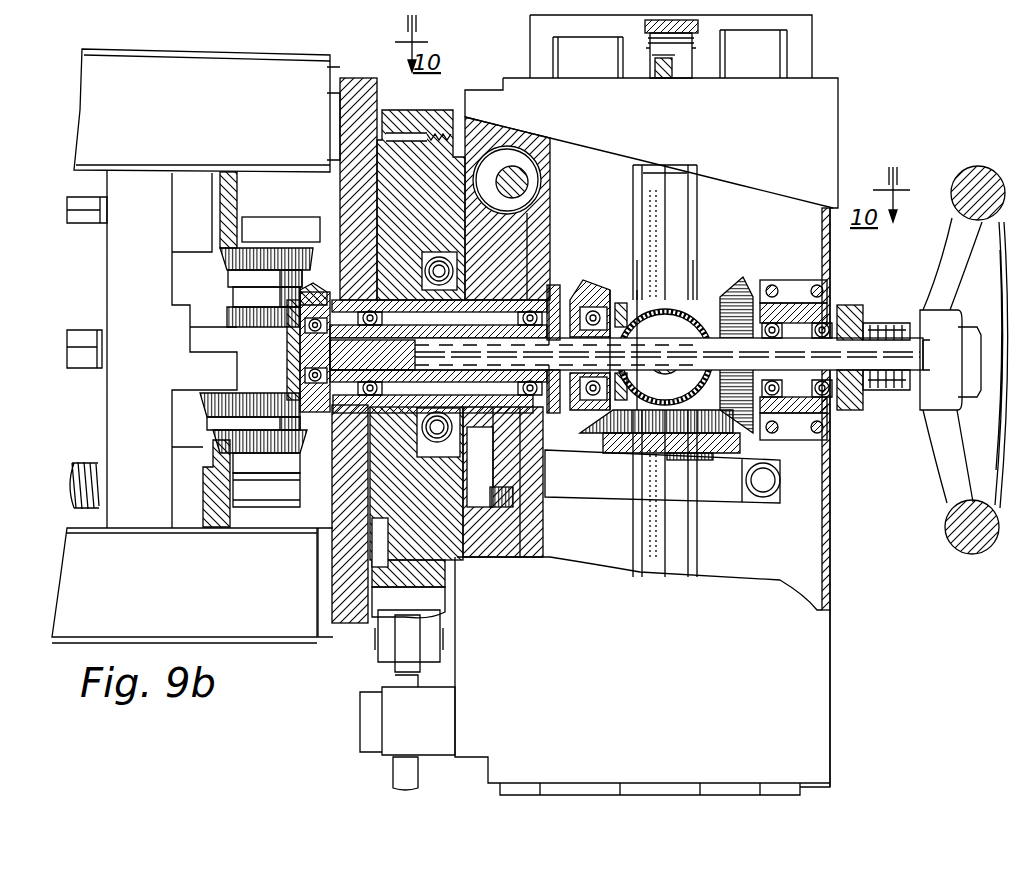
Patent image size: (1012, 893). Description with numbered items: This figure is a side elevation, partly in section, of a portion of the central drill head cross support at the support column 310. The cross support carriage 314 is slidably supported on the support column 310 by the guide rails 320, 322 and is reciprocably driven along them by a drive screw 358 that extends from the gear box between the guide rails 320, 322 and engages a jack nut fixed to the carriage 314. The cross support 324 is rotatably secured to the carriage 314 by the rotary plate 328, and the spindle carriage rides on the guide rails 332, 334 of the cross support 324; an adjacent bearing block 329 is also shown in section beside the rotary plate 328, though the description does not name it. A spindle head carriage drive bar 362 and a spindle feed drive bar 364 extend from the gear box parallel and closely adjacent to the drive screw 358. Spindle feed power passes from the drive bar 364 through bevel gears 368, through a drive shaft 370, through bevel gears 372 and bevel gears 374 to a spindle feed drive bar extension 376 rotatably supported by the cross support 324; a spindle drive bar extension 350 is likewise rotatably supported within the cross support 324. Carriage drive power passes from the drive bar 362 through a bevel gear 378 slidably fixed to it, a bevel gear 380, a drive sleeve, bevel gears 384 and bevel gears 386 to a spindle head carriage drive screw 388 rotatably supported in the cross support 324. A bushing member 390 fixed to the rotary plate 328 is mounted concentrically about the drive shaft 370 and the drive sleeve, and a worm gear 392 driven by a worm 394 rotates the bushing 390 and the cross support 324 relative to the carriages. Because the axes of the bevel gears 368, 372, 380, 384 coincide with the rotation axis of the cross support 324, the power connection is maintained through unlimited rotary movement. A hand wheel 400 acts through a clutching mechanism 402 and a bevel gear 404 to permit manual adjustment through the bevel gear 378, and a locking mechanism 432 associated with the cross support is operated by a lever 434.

The support column 310 is at (805, 33).
The carriage member 314 is at (810, 733).
The slide rail 320 is at (775, 67).
The slide rail 322 is at (560, 62).
The cross support 324 is at (80, 93).
The rotary plate 328 is at (367, 90).
The bearing block 329 is at (418, 115).
The guide rail 332 is at (75, 560).
The guide rail 334 is at (85, 152).
The spindle drive bar extension 350 is at (78, 352).
The drive screw 358 is at (680, 24).
The spindle head carriage drive bar 362 is at (683, 243).
The spindle feed drive bar 364 is at (667, 62).
The bevel gears 368 is at (622, 303).
The drive shaft 370 is at (548, 340).
The bevel gears 372 is at (285, 327).
The bevel gears 374 is at (220, 253).
The spindle feed drive bar extension 376 is at (78, 217).
The bevel gear 378 is at (737, 440).
The bevel gear 380 is at (583, 287).
The bevel gears 384 is at (313, 425).
The bevel gears 386 is at (213, 442).
The spindle head carriage drive screw 388 is at (72, 495).
The bushing member 390 is at (337, 258).
The worm gear 392 is at (517, 240).
The worm 394 is at (533, 185).
The hand wheel 400 is at (973, 268).
The clutching mechanism 402 is at (924, 432).
The bevel gear 404 is at (732, 297).
The locking mechanism 432 is at (433, 603).
The lever 434 is at (407, 768).